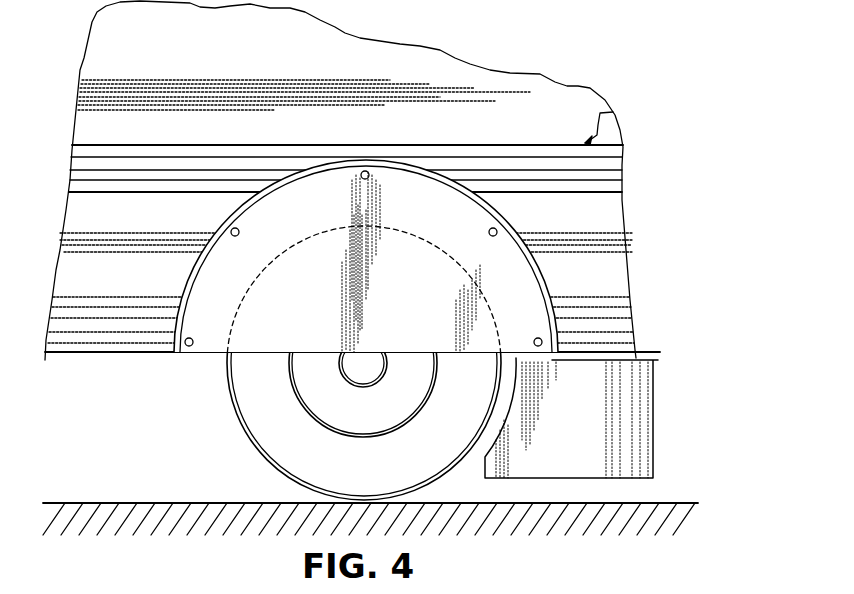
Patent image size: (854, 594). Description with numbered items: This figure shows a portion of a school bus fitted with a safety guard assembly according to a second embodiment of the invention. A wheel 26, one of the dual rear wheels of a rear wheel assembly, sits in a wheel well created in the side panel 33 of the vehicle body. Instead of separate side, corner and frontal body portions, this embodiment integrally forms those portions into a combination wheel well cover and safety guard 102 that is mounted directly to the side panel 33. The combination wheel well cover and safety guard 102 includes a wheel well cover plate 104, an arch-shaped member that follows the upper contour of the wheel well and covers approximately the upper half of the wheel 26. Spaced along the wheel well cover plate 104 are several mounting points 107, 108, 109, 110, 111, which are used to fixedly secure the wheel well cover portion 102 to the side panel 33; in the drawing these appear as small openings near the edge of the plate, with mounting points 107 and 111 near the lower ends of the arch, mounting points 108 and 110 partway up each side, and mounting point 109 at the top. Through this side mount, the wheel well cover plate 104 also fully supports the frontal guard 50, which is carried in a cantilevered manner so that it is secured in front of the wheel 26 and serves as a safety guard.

The side panel 33 is at (476, 88).
The combination wheel well cover and safety guard 102 is at (529, 301).
The wheel well cover plate 104 is at (300, 330).
The wheel 26 is at (260, 434).
The frontal guard 50 is at (662, 418).
The mounting point 107 is at (187, 347).
The mounting point 108 is at (231, 230).
The mounting point 109 is at (368, 171).
The mounting point 110 is at (498, 231).
The mounting point 111 is at (543, 342).